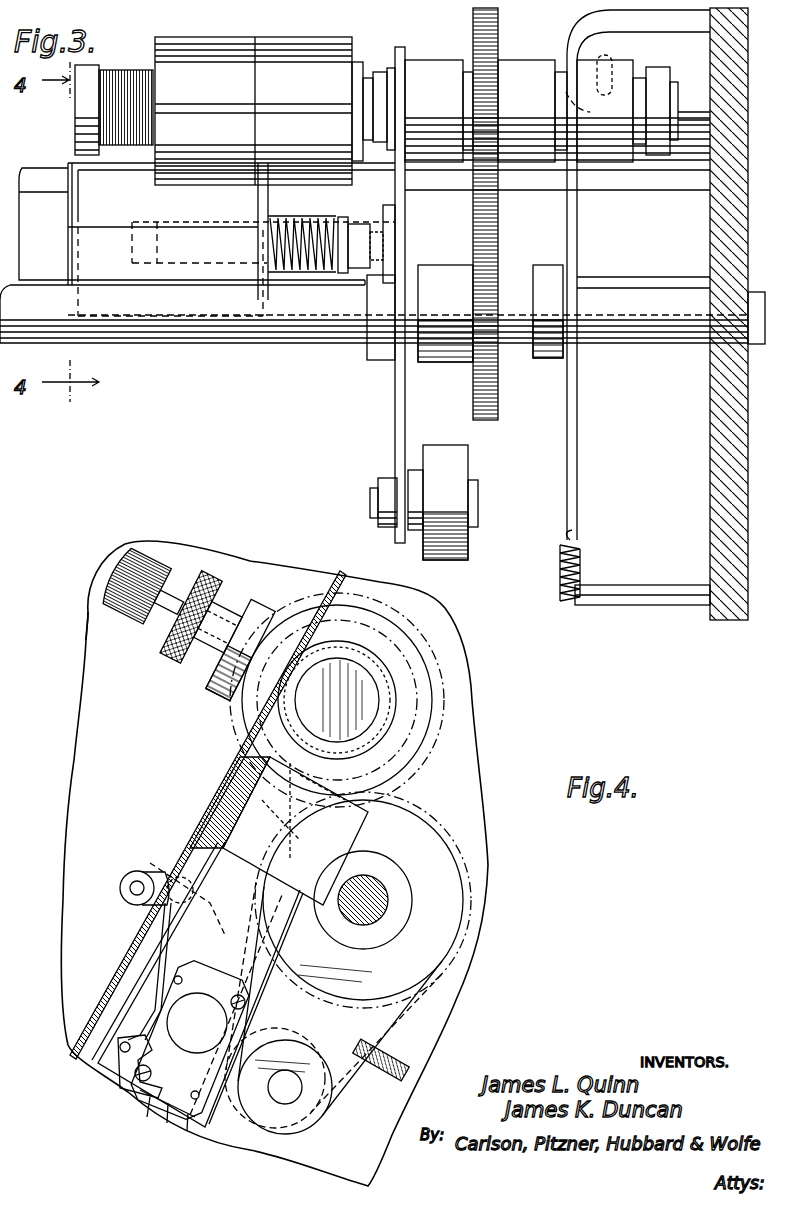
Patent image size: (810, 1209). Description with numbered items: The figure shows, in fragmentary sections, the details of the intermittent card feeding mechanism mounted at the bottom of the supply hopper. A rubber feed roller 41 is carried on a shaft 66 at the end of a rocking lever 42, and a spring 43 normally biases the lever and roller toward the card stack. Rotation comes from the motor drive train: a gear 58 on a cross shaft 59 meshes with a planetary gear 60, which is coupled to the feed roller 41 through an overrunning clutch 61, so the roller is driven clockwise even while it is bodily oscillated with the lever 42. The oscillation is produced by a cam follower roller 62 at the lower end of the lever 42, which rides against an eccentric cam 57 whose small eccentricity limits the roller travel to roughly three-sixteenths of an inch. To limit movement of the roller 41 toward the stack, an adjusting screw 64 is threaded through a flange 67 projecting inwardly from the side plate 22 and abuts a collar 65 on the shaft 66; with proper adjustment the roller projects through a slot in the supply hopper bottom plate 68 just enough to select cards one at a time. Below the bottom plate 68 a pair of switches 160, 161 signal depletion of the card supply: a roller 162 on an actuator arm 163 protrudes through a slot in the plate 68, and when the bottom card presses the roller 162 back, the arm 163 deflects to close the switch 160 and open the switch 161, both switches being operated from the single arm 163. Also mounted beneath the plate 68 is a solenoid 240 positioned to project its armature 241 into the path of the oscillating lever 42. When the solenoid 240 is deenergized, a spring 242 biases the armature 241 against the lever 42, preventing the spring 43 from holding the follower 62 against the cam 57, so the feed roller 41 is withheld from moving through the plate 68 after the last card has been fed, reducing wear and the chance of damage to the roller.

In FIG. 3, the side plate 22 is at (722, 222).
In FIG. 4, the side plate 22 is at (82, 696).
In FIG. 3, the feed roller 41 is at (295, 48).
In FIG. 4, the feed roller 41 is at (400, 684).
In FIG. 3, the rocking lever 42 is at (395, 384).
In FIG. 4, the rocking lever 42 is at (402, 760).
In FIG. 3, the spring 43 is at (582, 562).
In FIG. 4, the spring 43 is at (392, 1048).
In FIG. 4, the eccentric cam 57 is at (440, 1006).
In FIG. 3, the gear 58 is at (489, 236).
In FIG. 3, the cross shaft 59 is at (266, 334).
In FIG. 4, the cross shaft 59 is at (372, 906).
In FIG. 3, the planetary gear 60 is at (490, 36).
In FIG. 4, the planetary gear 60 is at (437, 741).
In FIG. 3, the overrunning clutch 61 is at (430, 64).
In FIG. 3, the cam follower roller 62 is at (452, 458).
In FIG. 4, the cam follower roller 62 is at (254, 1130).
In FIG. 3, the adjusting screw 64 is at (592, 48).
In FIG. 4, the adjusting screw 64 is at (143, 566).
In FIG. 3, the collar 65 is at (620, 72).
In FIG. 3, the shaft 66 is at (679, 96).
In FIG. 4, the shaft 66 is at (352, 676).
In FIG. 3, the flange 67 is at (675, 22).
In FIG. 4, the flange 67 is at (212, 587).
In FIG. 4, the supply hopper bottom plate 68 is at (334, 586).
In FIG. 4, the switch 160 is at (200, 1008).
In FIG. 4, the switch 161 is at (197, 1000).
In FIG. 4, the roller 162 is at (142, 874).
In FIG. 4, the actuator arm 163 is at (156, 934).
In FIG. 3, the solenoid 240 is at (120, 274).
In FIG. 4, the solenoid 240 is at (258, 852).
In FIG. 3, the armature 241 is at (372, 224).
In FIG. 4, the armature 241 is at (312, 826).
In FIG. 3, the spring 242 is at (318, 264).